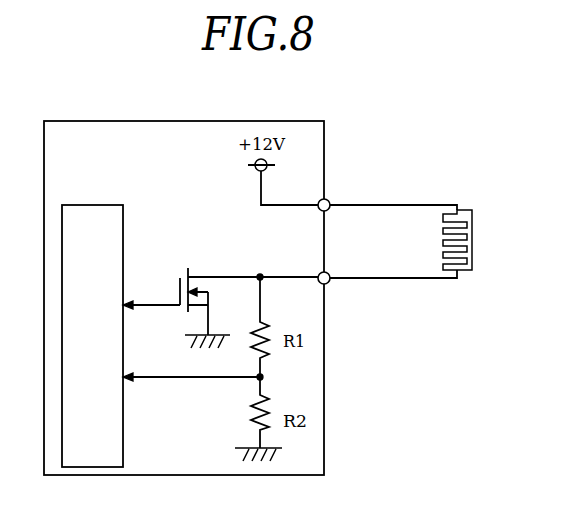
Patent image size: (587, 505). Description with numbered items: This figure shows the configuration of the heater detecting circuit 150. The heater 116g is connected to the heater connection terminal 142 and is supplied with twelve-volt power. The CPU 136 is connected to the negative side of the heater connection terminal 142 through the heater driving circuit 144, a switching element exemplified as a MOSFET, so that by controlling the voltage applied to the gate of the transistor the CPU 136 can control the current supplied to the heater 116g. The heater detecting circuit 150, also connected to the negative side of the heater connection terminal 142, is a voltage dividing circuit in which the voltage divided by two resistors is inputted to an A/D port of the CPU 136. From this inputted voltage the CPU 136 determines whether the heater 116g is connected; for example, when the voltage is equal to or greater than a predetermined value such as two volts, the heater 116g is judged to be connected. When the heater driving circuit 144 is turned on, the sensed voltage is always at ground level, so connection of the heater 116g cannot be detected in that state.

The CPU 136 is at (85, 205).
The heater driving circuit 144 is at (179, 272).
The heater connection terminal 142 is at (327, 210).
The heater 116g is at (463, 210).
The heater detecting circuit 150 is at (293, 374).